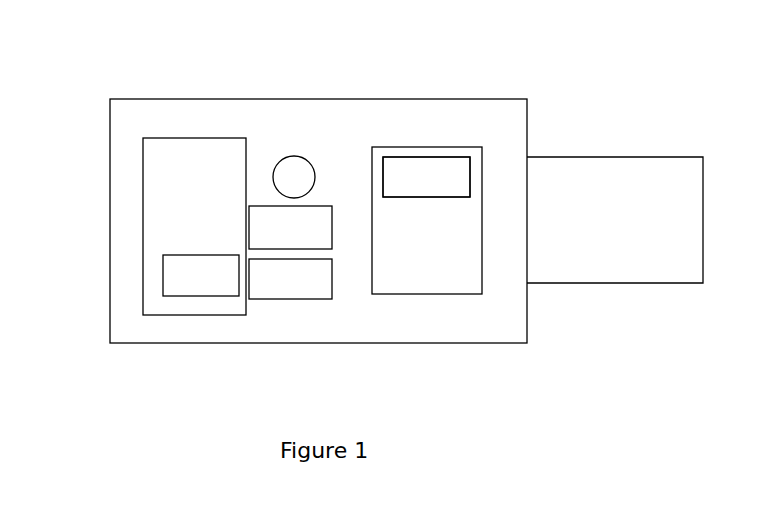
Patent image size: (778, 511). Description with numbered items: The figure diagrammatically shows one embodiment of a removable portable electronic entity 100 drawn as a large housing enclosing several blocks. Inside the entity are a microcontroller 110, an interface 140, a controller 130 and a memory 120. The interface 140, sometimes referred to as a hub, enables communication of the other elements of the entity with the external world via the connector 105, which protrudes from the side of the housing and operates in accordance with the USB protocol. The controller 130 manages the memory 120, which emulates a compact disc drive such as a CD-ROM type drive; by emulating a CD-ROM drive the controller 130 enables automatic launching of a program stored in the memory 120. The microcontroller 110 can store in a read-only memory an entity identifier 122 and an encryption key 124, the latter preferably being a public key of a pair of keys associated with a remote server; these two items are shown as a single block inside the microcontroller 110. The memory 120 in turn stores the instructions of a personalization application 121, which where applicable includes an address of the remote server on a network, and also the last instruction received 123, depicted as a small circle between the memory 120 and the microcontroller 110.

The removable portable electronic entity 100 is at (510, 336).
The connector 105 is at (607, 273).
The microcontroller 110 is at (470, 234).
The memory 120 is at (178, 147).
The personalization application 121 is at (173, 284).
The entity identifier 122 is at (460, 176).
The last instruction received 123 is at (307, 178).
The encryption key 124 is at (426, 177).
The controller 130 is at (290, 288).
The interface 140 is at (312, 235).